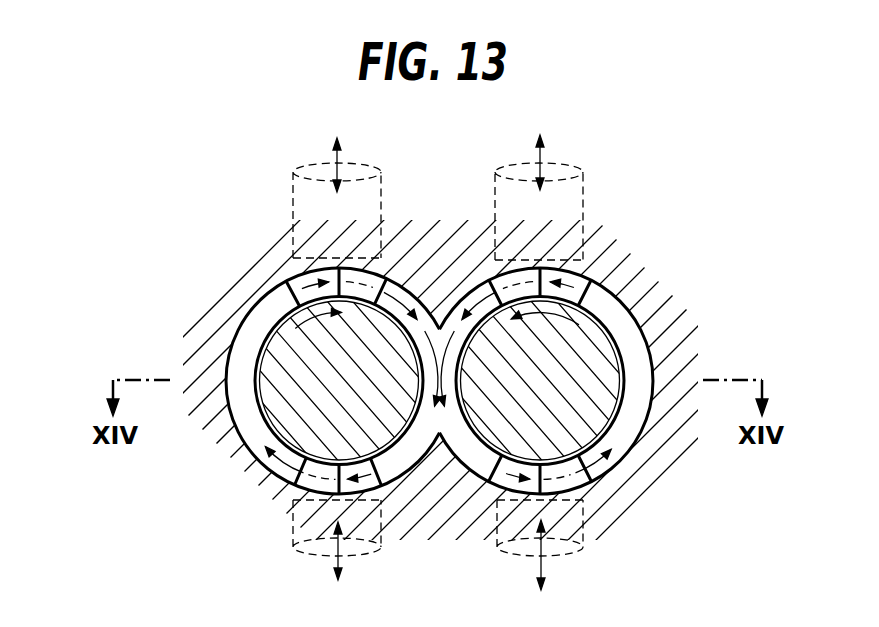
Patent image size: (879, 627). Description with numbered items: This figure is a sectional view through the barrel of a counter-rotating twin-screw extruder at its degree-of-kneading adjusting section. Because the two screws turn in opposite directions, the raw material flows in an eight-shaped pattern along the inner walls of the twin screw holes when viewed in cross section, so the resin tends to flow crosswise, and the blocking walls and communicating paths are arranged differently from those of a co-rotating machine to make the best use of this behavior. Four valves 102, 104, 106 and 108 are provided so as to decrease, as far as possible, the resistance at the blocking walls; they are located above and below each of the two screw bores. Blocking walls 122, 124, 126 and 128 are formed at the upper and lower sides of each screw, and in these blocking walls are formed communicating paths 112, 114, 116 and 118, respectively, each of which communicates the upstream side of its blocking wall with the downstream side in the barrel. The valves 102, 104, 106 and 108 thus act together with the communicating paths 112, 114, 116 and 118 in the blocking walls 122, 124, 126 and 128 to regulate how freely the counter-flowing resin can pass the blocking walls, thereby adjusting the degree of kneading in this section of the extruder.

The valve 102 is at (295, 252).
The valve 104 is at (293, 503).
The valve 106 is at (498, 256).
The valve 108 is at (585, 503).
The communicating path 112 is at (355, 272).
The communicating path 114 is at (380, 500).
The communicating path 116 is at (560, 263).
The communicating path 118 is at (550, 490).
The blocking wall 122 is at (380, 286).
The blocking wall 124 is at (383, 462).
The blocking wall 126 is at (583, 268).
The blocking wall 128 is at (512, 503).